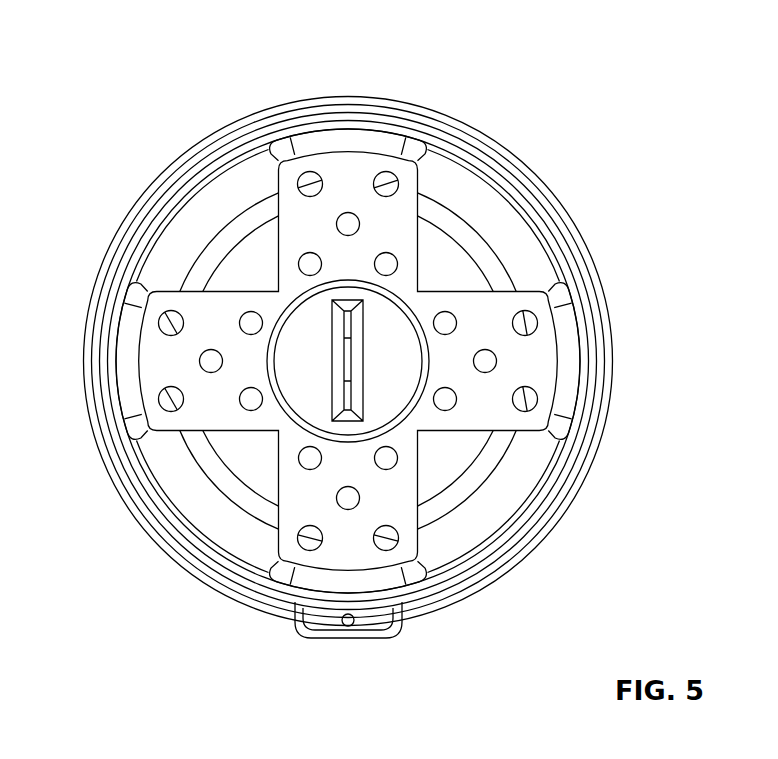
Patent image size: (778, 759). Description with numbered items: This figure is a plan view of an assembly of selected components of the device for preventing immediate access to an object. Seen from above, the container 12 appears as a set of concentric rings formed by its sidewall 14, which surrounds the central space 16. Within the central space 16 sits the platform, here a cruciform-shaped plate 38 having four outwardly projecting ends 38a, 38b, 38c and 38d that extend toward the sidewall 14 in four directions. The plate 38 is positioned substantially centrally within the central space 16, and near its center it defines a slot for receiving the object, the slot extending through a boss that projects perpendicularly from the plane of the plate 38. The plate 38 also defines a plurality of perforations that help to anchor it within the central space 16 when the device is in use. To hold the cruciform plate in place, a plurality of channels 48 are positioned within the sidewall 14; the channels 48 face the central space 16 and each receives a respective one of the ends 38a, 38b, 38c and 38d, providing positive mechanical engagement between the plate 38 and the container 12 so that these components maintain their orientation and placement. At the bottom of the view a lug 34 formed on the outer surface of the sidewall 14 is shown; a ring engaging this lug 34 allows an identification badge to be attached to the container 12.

The container 12 is at (421, 112).
The sidewall 14 is at (548, 530).
The central space 16 is at (435, 443).
The lug 34 is at (331, 629).
The cruciform-shaped plate 38 is at (427, 305).
The projecting end 38a is at (343, 553).
The projecting end 38b is at (551, 338).
The projecting end 38c is at (338, 165).
The projecting end 38d is at (145, 361).
The channels 48 is at (582, 361).